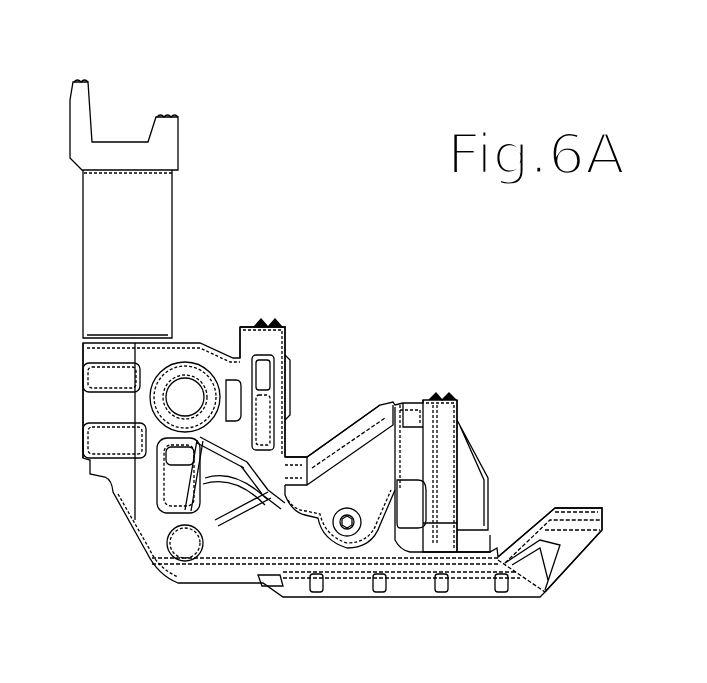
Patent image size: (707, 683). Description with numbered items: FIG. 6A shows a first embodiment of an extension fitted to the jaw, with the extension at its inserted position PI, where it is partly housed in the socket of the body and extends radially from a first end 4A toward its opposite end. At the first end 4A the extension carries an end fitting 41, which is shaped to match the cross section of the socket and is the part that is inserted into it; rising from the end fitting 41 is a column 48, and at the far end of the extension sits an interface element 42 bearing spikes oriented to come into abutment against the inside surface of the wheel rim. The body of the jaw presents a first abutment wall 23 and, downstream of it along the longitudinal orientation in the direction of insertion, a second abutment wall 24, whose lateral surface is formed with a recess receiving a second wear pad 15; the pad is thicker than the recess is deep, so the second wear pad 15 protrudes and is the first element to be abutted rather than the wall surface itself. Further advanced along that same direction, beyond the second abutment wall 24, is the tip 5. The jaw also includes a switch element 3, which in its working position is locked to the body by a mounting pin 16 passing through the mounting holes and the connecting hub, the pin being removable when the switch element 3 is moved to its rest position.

The interface element 42 is at (70, 122).
The column 48 is at (173, 212).
The inserted position PI is at (215, 178).
The end fitting 41 is at (157, 338).
The first end 4A is at (98, 323).
The first abutment wall 23 is at (286, 338).
The second abutment wall 24 is at (458, 408).
The tip 5 is at (590, 510).
The second wear pad 15 is at (507, 523).
The mounting pin 16 is at (348, 533).
The switch element 3 is at (312, 493).